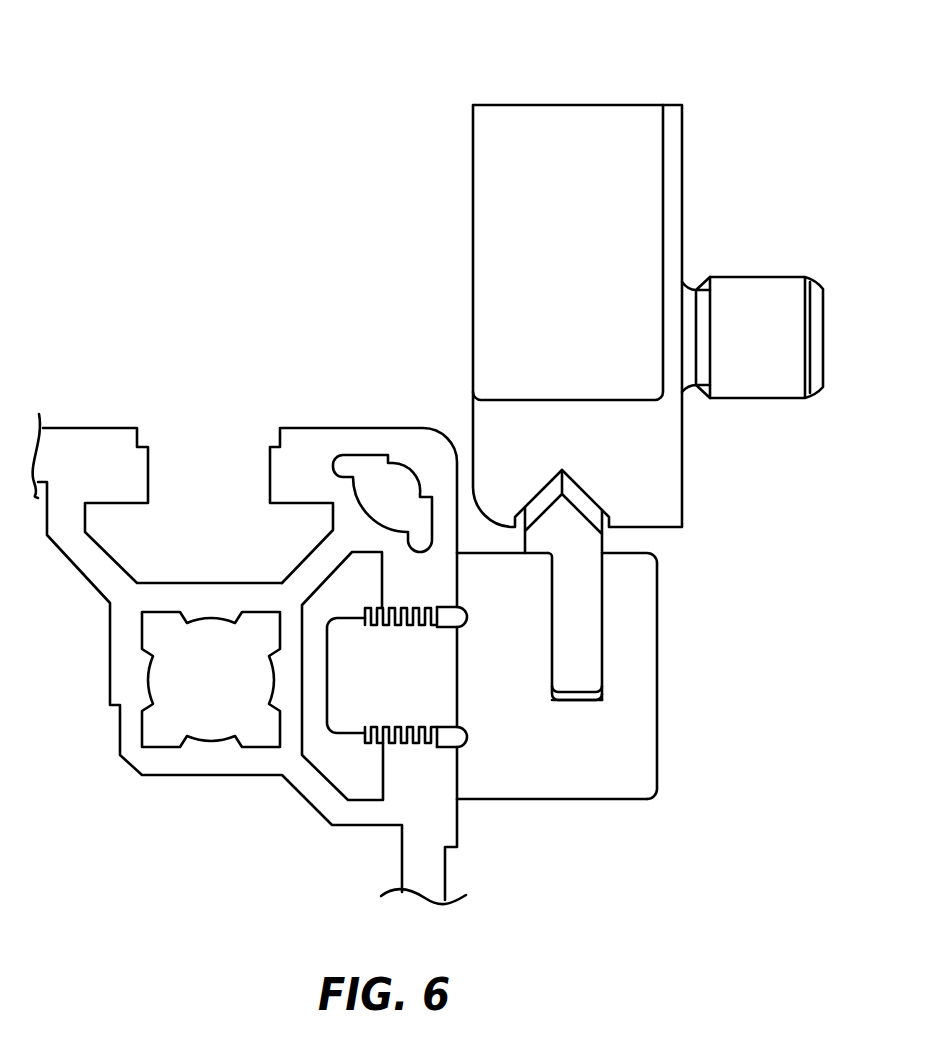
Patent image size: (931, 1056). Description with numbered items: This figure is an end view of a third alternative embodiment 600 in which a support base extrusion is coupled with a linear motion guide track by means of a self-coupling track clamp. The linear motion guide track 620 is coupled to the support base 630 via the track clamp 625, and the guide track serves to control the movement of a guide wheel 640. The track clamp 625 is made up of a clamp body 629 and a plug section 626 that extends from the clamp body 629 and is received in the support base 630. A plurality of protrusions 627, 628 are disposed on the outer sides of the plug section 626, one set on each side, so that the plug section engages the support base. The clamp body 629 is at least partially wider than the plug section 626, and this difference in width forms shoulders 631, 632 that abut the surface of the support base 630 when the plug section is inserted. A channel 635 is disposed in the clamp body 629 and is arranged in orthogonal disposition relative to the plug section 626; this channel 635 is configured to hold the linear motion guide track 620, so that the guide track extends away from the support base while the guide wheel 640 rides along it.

The embodiment 600 is at (141, 86).
The linear motion guide track 620 is at (608, 592).
The track clamp 625 is at (664, 657).
The plug section 626 is at (428, 689).
The protrusion 627 is at (372, 603).
The protrusion 628 is at (371, 748).
The clamp body 629 is at (563, 745).
The support base 630 is at (85, 428).
The shoulder 631 is at (512, 791).
The shoulder 632 is at (523, 589).
The channel 635 is at (583, 710).
The guide wheel 640 is at (593, 260).